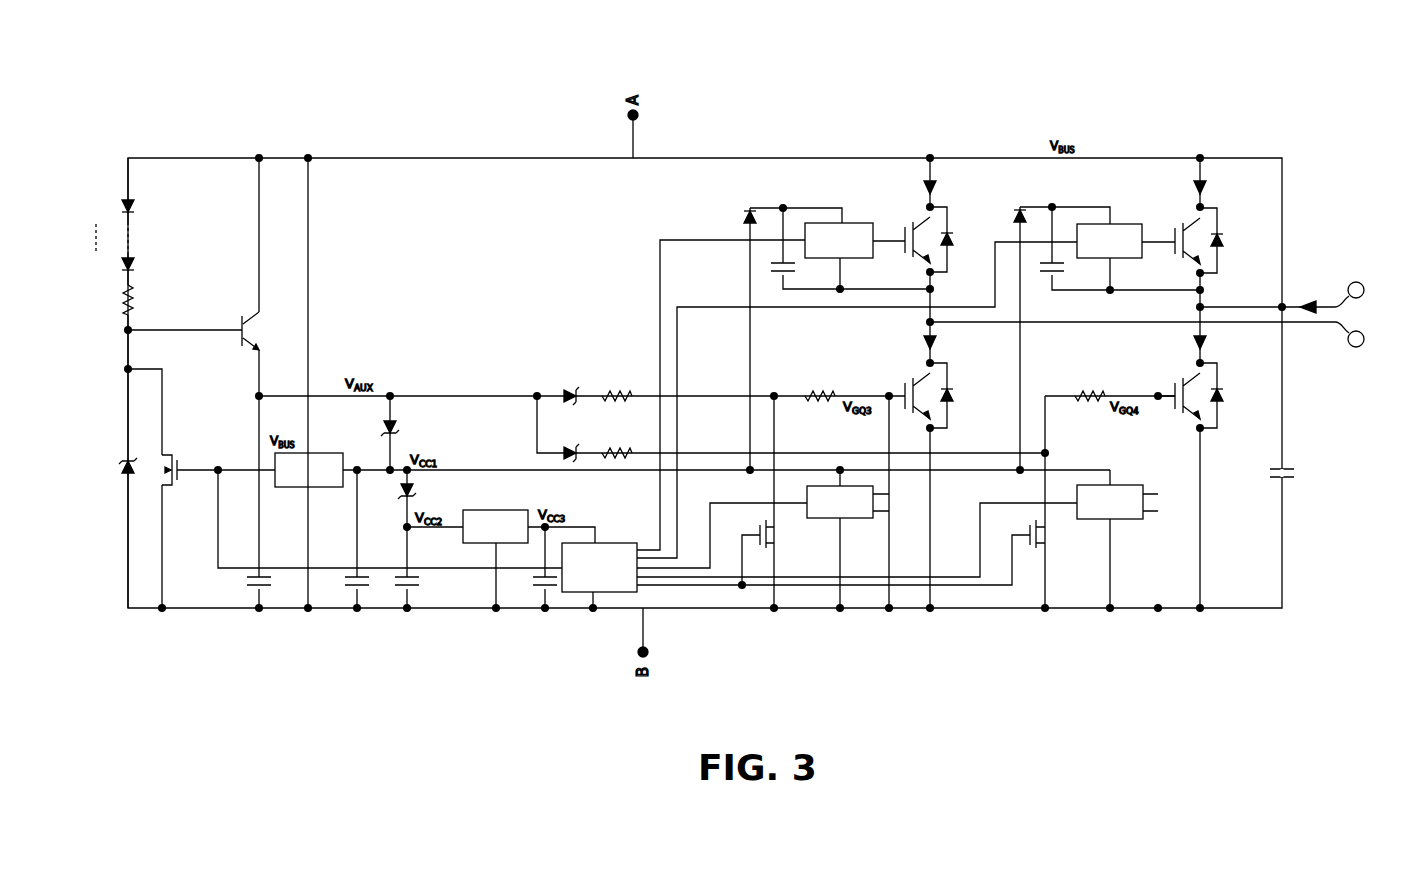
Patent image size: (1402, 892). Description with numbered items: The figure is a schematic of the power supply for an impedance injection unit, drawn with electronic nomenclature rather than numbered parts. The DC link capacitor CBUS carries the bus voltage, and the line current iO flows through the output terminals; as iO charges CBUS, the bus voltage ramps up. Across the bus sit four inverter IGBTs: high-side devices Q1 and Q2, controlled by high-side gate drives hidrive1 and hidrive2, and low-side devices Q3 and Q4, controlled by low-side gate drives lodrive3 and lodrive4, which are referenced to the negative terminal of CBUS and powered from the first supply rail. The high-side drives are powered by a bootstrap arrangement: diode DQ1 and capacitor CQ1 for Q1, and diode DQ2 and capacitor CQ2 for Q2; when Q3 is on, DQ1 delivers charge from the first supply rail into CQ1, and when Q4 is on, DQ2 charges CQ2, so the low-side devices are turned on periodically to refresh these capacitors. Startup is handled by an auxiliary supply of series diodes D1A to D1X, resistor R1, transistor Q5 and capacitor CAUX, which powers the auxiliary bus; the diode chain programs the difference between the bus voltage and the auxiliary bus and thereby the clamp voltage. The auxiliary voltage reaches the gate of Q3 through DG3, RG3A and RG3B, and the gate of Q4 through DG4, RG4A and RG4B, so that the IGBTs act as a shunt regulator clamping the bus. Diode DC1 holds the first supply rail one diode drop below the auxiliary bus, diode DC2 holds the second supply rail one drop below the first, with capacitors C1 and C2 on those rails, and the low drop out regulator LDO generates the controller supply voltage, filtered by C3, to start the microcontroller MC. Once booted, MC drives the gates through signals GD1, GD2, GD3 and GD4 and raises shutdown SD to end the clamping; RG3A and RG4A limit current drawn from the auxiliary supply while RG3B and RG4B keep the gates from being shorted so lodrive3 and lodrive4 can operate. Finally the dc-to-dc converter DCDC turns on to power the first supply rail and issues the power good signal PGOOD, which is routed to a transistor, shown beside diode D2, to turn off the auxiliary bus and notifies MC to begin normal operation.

The first auxiliary diode D1A is at (106, 205).
The last auxiliary diode D1X is at (106, 268).
The auxiliary supply resistor R1 is at (114, 327).
The auxiliary supply transistor Q5 is at (204, 331).
The diode D2 is at (112, 488).
The power good signal PGOOD is at (218, 464).
The dc-to-dc converter DCDC is at (692, 470).
The auxiliary capacitor CAUX is at (240, 592).
The VCC1 filter capacitor C1 is at (352, 539).
The VCC2 filter capacitor C2 is at (401, 567).
The VCC3 filter capacitor C3 is at (538, 567).
The diode DC1 is at (405, 433).
The diode DC2 is at (422, 498).
The low drop out regulator LDO is at (501, 559).
The microcontroller MC is at (599, 575).
The gate drive signal for Q1 GD1 is at (721, 395).
The gate drive signal for Q2 GD2 is at (857, 400).
The gate drive signal for Q3 GD3 is at (722, 535).
The gate drive signal for Q4 GD4 is at (857, 540).
The shutdown signal SD is at (841, 554).
The gate diode DG3 is at (566, 386).
The gate resistor RG3A is at (618, 384).
The gate diode DG4 is at (566, 444).
The gate resistor RG4A is at (618, 442).
The gate resistor RG3B is at (815, 384).
The gate resistor RG4B is at (1110, 384).
The low side gate drive lodrive3 is at (848, 539).
The low side gate drive lodrive4 is at (1117, 539).
The high side IGBT Q1 is at (912, 260).
The bootstrap diode DQ1 is at (772, 337).
The bootstrap capacitor CQ1 is at (850, 248).
The high side gate drive hidrive1 is at (855, 256).
The low side IGBT Q3 is at (933, 472).
The high side IGBT Q2 is at (1181, 260).
The bootstrap diode DQ2 is at (1041, 337).
The bootstrap capacitor CQ2 is at (1120, 248).
The high side gate drive hidrive2 is at (1126, 257).
The low side IGBT Q4 is at (1203, 472).
The output current iO is at (1160, 314).
The DC link capacitor CBUS is at (1296, 485).